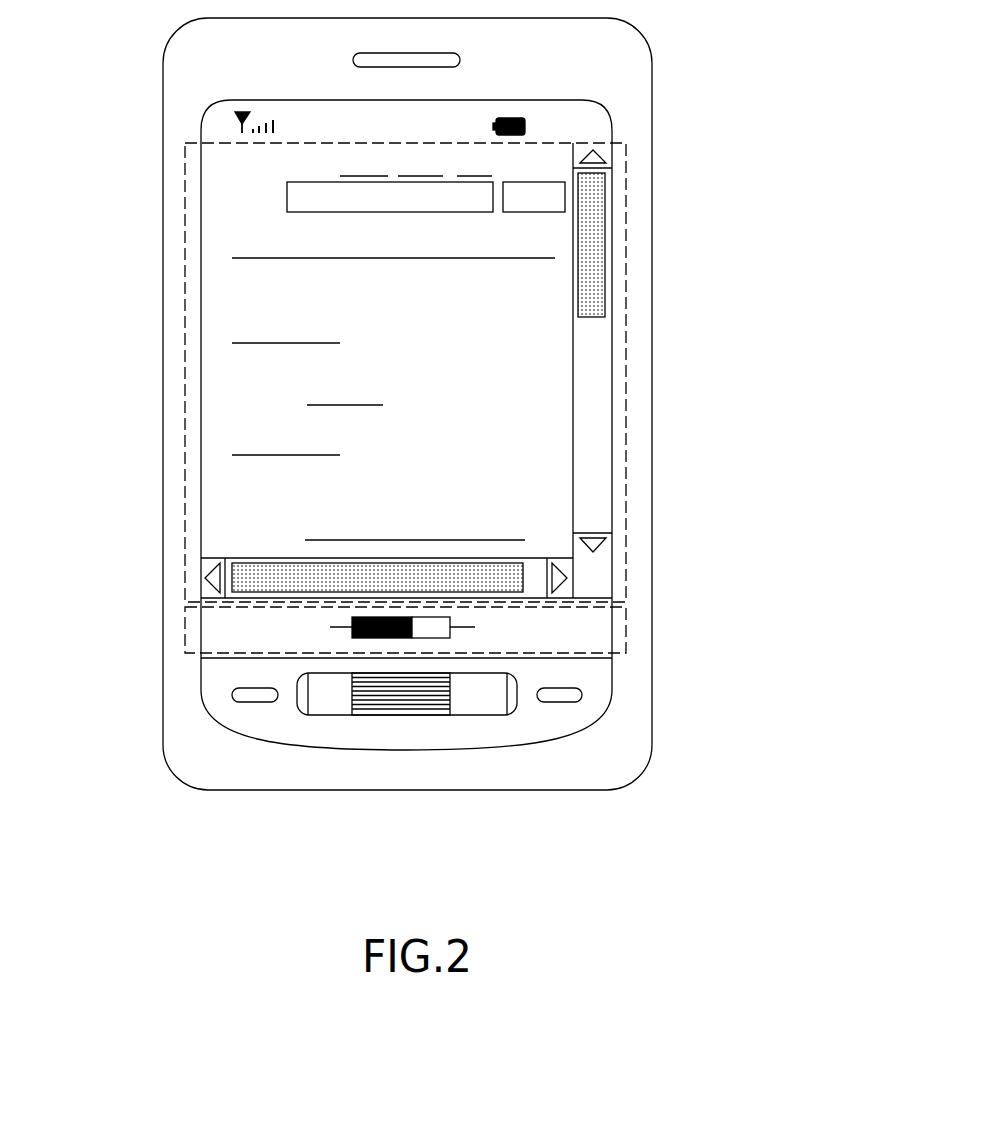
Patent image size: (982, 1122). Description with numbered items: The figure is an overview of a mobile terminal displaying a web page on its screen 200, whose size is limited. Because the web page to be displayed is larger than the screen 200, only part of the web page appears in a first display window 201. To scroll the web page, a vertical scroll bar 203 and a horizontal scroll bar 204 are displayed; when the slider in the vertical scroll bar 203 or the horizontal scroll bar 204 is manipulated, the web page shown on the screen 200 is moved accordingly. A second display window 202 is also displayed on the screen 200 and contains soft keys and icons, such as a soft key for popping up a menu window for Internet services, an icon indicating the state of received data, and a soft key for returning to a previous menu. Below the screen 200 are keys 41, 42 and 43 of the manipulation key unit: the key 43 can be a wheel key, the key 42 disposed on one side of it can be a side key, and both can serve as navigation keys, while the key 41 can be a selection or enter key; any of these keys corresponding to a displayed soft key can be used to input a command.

The screen 200 is at (614, 100).
The first display window 201 is at (186, 400).
The second display window 202 is at (186, 632).
The vertical scroll bar 203 is at (596, 294).
The horizontal scroll bar 204 is at (507, 573).
The selection or enter key 41 is at (257, 702).
The side key 42 is at (330, 715).
The wheel key 43 is at (415, 715).